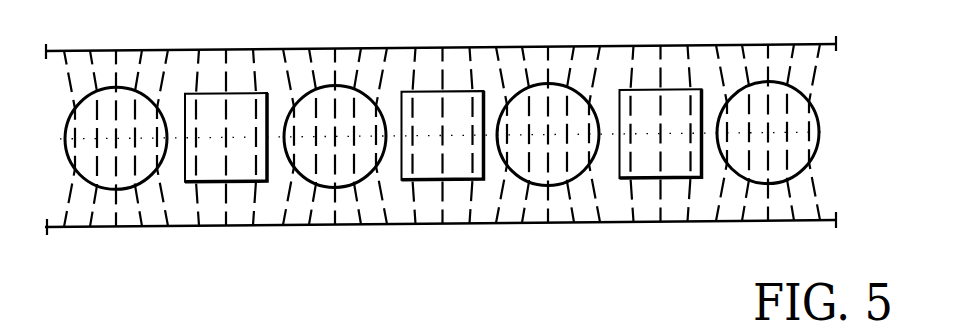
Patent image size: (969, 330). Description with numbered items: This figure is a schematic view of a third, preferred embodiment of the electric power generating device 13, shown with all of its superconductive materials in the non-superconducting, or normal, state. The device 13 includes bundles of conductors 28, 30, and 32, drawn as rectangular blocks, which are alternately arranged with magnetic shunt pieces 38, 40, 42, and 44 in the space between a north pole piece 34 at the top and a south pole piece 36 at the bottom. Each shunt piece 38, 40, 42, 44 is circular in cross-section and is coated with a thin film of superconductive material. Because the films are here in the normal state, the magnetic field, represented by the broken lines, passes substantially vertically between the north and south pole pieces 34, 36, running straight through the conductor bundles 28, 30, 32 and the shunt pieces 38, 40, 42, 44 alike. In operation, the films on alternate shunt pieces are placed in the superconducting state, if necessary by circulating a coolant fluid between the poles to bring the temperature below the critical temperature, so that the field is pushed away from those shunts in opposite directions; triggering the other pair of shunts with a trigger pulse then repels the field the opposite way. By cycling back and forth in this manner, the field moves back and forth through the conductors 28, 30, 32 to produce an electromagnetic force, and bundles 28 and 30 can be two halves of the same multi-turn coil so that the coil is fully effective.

The electric power generating device 13 is at (752, 37).
The bundle of conductors 28 is at (210, 95).
The bundle of conductors 30 is at (452, 95).
The bundle of conductors 32 is at (641, 95).
The north pole piece 34 is at (97, 51).
The south pole piece 36 is at (186, 228).
The magnetic shunt piece 38 is at (84, 182).
The magnetic shunt piece 40 is at (299, 175).
The magnetic shunt piece 42 is at (512, 175).
The magnetic shunt piece 44 is at (727, 168).